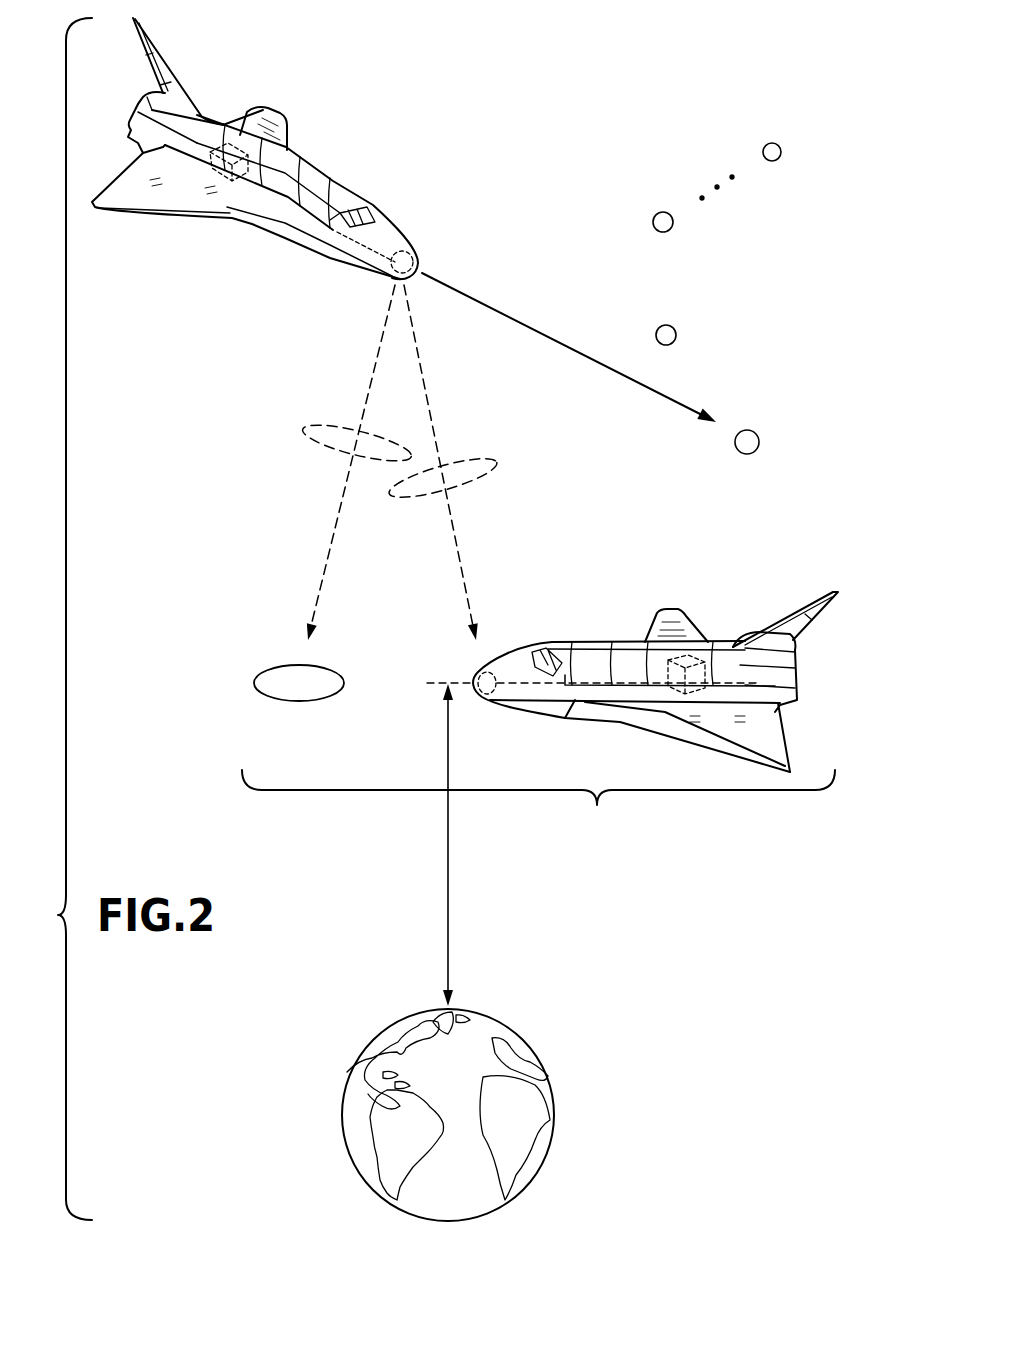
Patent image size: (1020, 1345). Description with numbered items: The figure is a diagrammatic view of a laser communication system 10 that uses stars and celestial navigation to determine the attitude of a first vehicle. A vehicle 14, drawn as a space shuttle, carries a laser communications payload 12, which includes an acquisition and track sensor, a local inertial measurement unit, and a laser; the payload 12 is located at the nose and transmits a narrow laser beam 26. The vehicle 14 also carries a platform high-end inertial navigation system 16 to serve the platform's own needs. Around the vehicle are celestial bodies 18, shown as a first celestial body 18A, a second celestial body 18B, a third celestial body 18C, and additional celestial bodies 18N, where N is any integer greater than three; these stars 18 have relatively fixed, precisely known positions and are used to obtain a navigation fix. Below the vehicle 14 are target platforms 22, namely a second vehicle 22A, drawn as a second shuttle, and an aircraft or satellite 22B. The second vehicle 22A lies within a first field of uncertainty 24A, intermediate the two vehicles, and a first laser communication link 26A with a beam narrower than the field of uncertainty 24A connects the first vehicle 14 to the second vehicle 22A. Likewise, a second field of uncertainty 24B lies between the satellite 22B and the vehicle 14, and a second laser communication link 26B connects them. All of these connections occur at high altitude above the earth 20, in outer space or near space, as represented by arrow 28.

The laser communication system 10 is at (600, 80).
The laser communications payload 12 is at (417, 252).
The vehicle 14 is at (345, 168).
The platform high-end inertial navigation system 16 is at (225, 143).
The celestial bodies 18 is at (661, 327).
The first celestial body 18A is at (745, 460).
The second celestial body 18B is at (678, 320).
The third celestial body 18C is at (652, 212).
The additional celestial bodies 18N is at (760, 144).
The earth 20 is at (534, 1040).
The target platforms 22 is at (502, 692).
The second vehicle 22A is at (613, 638).
The aircraft or satellite 22B is at (278, 660).
The first field of uncertainty 24A is at (478, 460).
The second field of uncertainty 24B is at (321, 428).
The narrow laser beam 26 is at (513, 320).
The first laser communication link 26A is at (428, 405).
The second laser communication link 26B is at (337, 513).
The arrow representing high altitude connections 28 is at (448, 858).